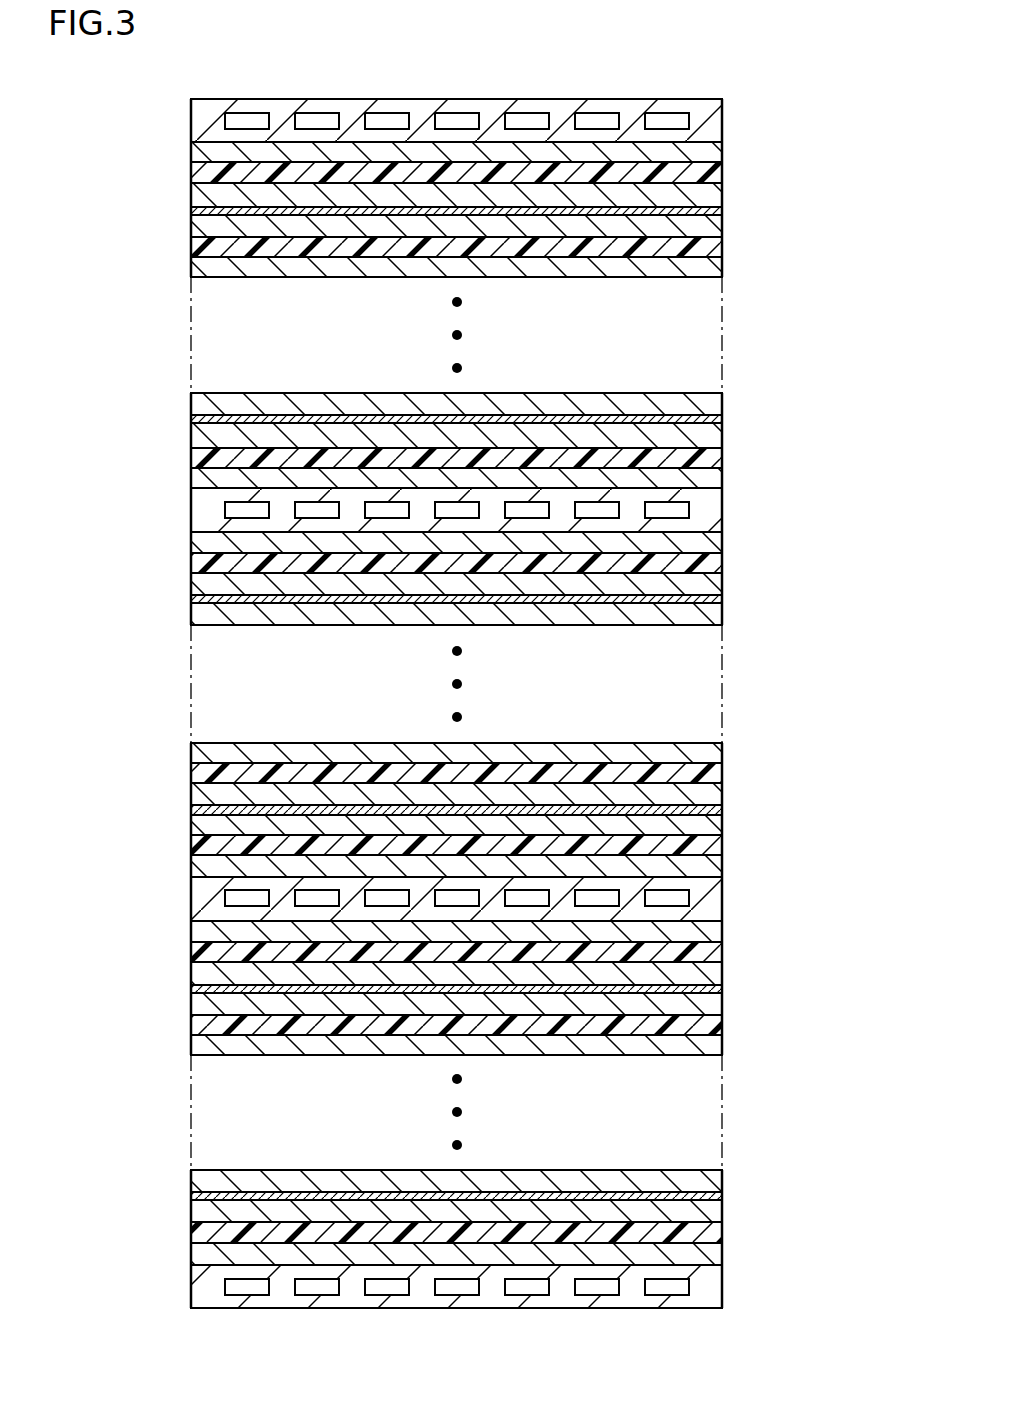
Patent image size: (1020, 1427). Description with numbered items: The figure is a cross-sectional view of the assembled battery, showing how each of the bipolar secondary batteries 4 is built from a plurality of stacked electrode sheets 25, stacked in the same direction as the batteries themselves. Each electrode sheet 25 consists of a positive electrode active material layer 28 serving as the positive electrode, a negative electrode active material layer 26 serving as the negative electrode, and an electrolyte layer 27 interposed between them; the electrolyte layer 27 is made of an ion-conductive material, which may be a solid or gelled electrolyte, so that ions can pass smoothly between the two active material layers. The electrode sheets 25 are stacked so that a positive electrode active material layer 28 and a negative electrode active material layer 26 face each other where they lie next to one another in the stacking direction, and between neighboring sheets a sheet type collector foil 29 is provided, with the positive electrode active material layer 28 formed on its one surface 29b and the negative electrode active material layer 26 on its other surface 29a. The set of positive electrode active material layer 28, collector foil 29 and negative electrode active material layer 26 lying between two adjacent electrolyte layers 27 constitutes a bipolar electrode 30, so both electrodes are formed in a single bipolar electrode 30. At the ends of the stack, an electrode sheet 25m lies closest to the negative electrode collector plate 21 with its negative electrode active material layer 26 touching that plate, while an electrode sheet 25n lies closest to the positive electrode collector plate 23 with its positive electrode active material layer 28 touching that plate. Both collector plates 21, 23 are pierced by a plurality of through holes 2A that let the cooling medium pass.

The through hole 2A is at (245, 118).
The bipolar secondary battery 4 is at (182, 143).
The negative electrode collector plate 21 is at (708, 119).
The positive electrode collector plate 23 is at (707, 512).
The electrode sheet 25 is at (787, 220).
The electrode sheet 25m is at (787, 125).
The electrode sheet 25n is at (787, 420).
The negative electrode active material layer 26 is at (688, 152).
The electrolyte layer 27 is at (688, 172).
The positive electrode active material layer 28 is at (688, 197).
The collector foil 29 is at (203, 211).
The other surface 29a is at (208, 242).
The one surface 29b is at (215, 180).
The bipolar electrode 30 is at (128, 373).